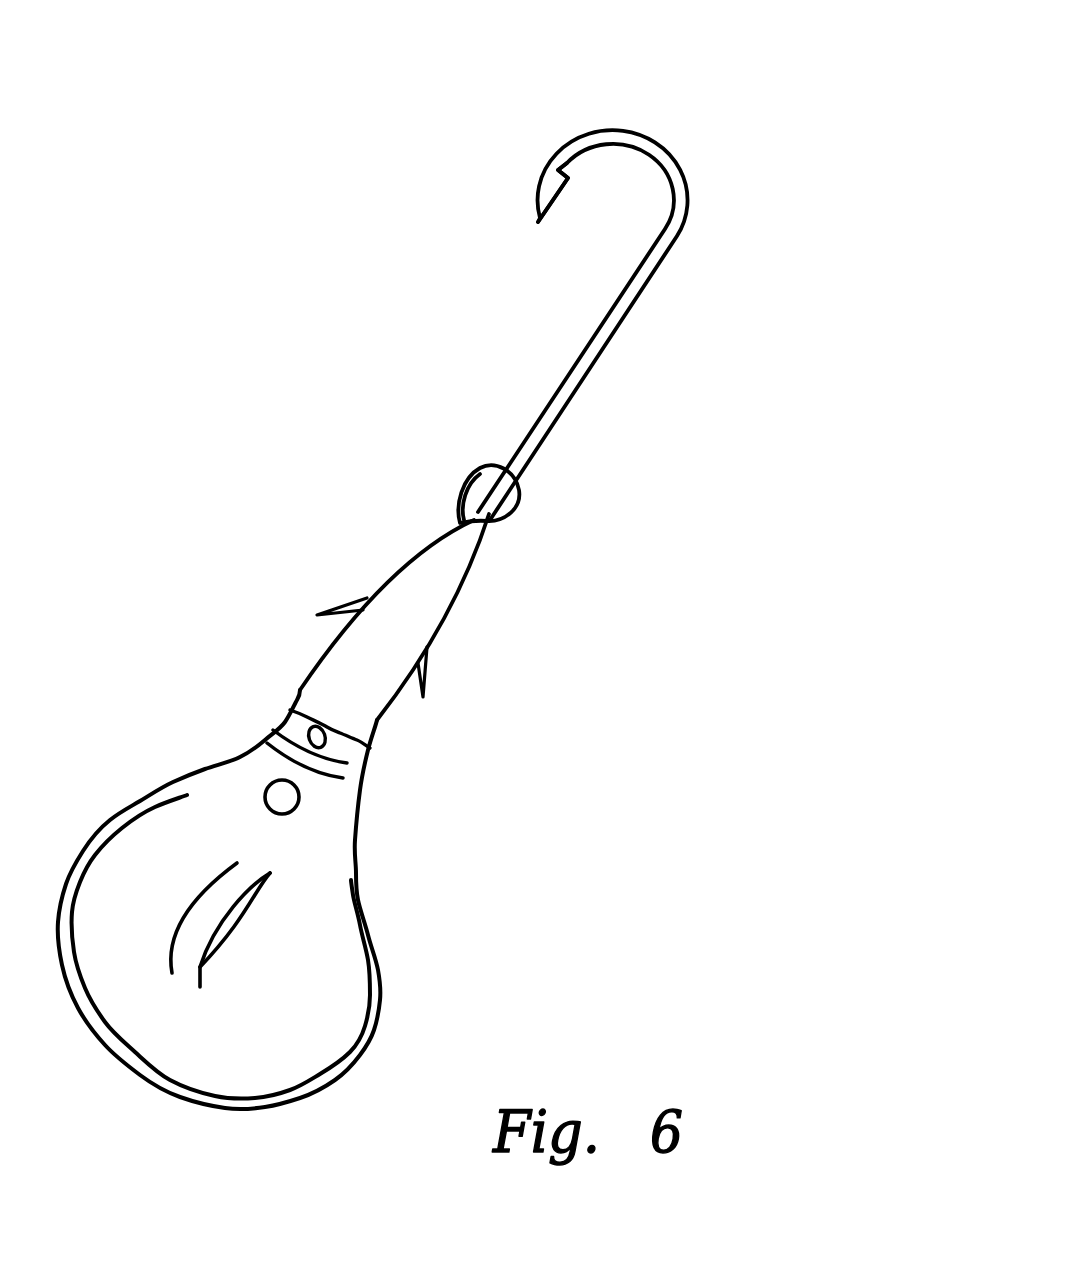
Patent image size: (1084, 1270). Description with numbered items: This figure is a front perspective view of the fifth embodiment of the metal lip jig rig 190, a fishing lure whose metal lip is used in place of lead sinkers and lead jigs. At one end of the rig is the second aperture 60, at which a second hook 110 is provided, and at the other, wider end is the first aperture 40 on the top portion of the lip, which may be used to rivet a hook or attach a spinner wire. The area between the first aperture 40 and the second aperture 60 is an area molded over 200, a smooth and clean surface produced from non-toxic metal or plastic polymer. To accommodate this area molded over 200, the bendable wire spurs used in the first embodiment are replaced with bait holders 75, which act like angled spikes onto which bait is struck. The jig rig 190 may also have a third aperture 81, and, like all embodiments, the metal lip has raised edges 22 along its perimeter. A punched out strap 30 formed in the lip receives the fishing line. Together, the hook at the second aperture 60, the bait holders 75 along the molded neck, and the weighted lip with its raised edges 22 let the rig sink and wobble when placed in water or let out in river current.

The metal lip jig rig 190 is at (675, 100).
The second hook 110 is at (615, 130).
The second aperture 60 is at (520, 495).
The area molded over 200 is at (447, 568).
The bait holder 75 is at (354, 608).
The raised edges 22 is at (363, 1027).
The first aperture 40 is at (370, 748).
The third aperture 81 is at (293, 807).
The punched out strap 30 is at (180, 924).